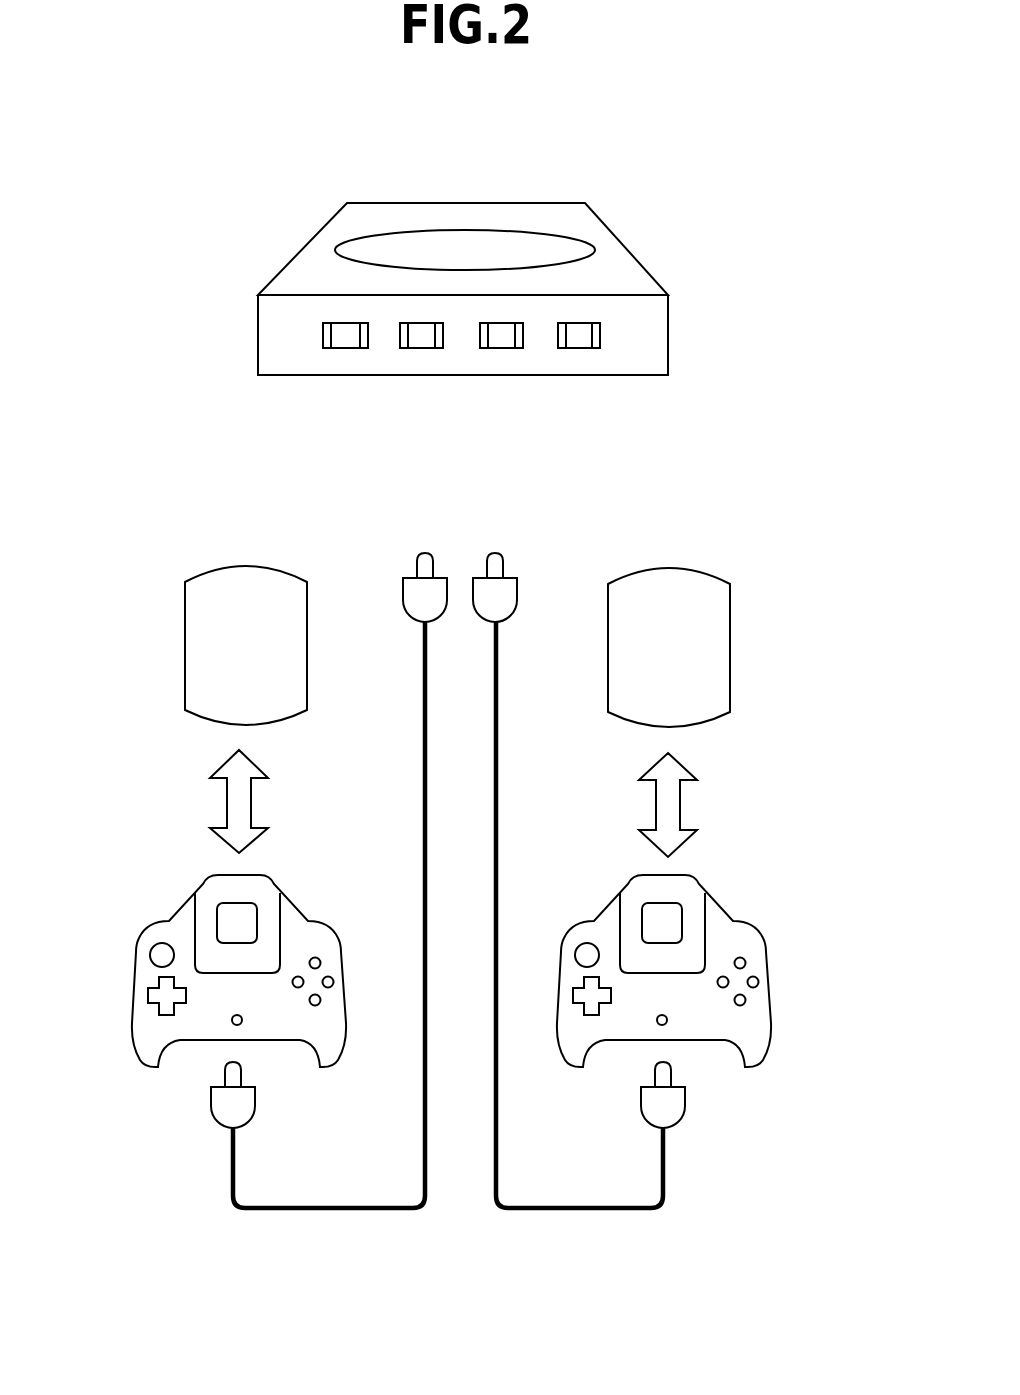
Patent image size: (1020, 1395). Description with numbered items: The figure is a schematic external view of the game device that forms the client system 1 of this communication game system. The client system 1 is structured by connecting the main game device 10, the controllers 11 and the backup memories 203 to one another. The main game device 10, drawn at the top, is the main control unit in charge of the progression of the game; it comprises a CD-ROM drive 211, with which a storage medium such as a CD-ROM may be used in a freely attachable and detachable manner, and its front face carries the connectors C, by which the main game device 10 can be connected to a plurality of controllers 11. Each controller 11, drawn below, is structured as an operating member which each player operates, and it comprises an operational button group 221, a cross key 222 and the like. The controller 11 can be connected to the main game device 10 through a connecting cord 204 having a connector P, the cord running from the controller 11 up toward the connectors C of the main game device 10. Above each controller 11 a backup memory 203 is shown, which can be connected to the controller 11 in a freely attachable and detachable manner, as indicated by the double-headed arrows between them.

The client system 1 is at (787, 169).
The main game device 10 is at (408, 202).
The CD-ROM drive 211 is at (570, 245).
The connectors C is at (342, 338).
The backup memory 203 is at (668, 567).
The controller 11 is at (153, 1068).
The operational button group 221 is at (352, 958).
The cross key 222 is at (165, 1027).
The connector P is at (475, 578).
The connecting cord 204 is at (517, 1213).